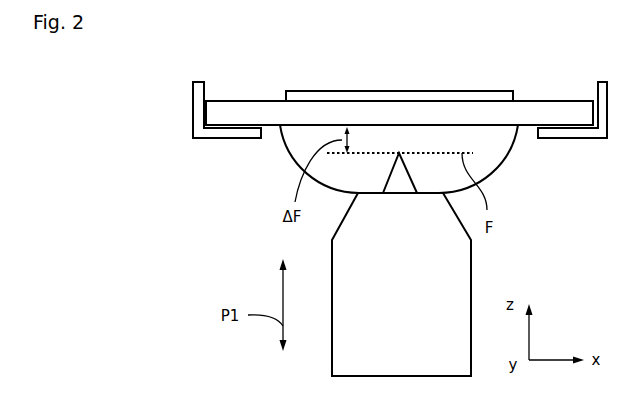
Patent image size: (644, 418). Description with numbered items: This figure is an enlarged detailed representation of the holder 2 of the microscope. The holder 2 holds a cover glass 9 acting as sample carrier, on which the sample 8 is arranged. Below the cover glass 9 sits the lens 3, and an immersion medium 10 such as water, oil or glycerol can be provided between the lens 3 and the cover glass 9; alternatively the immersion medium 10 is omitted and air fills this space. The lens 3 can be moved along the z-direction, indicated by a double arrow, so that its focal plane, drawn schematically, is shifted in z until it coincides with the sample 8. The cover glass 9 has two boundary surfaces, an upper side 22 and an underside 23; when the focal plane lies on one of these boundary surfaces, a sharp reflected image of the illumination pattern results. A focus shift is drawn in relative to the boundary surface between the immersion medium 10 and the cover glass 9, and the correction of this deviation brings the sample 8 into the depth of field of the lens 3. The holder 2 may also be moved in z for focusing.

The holder 2 is at (220, 139).
The upper side of the cover glass 22 is at (232, 102).
The cover glass 9 is at (279, 112).
The sample 8 is at (465, 91).
The underside of the cover glass 23 is at (528, 128).
The immersion medium 10 is at (497, 170).
The lens 3 is at (332, 365).